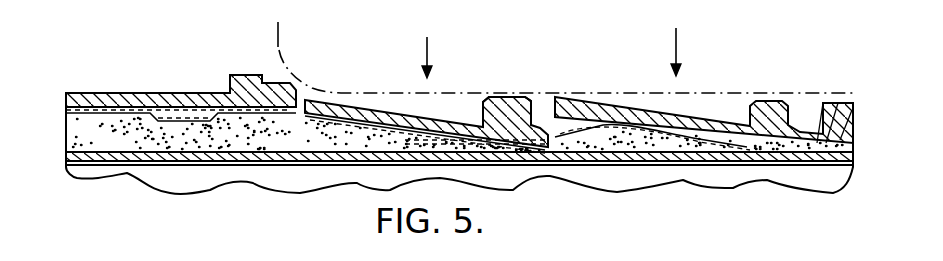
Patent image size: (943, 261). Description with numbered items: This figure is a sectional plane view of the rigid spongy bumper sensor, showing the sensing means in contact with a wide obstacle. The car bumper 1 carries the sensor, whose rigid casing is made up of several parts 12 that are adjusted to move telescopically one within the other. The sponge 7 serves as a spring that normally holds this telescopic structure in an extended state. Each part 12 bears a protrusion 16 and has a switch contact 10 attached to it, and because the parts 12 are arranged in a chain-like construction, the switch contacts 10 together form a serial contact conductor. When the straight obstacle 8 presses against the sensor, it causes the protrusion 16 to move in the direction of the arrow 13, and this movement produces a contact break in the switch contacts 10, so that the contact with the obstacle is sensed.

The car bumper 1 is at (163, 178).
The sponge 7 is at (140, 118).
The straight obstacle 8 is at (276, 44).
The switch contacts 10 is at (253, 117).
The casing part 12 is at (355, 108).
The arrow 13 is at (563, 53).
The protrusion 16 is at (513, 93).